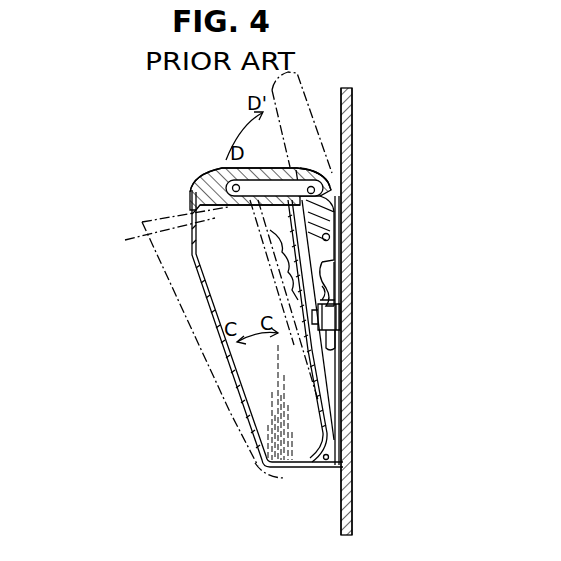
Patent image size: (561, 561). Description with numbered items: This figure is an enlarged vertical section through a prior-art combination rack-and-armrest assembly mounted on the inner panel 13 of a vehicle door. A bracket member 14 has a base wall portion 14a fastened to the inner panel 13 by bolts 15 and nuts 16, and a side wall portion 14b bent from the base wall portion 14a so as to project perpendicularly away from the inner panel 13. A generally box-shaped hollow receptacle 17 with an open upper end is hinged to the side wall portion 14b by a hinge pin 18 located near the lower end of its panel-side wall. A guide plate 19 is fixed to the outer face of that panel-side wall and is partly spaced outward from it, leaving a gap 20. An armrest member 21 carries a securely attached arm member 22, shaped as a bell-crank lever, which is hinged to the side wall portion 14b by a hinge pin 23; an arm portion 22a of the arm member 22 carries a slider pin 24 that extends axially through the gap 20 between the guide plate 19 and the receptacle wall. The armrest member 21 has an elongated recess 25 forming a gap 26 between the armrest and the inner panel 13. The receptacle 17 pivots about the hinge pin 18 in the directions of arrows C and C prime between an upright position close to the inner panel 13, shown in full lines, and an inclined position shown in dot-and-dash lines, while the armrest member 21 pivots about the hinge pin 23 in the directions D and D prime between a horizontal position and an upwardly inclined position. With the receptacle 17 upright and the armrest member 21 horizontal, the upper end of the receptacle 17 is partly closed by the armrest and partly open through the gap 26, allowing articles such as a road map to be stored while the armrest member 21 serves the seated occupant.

The inner panel 13 is at (352, 118).
The bracket member 14 is at (332, 480).
The base wall portion 14a is at (352, 428).
The side wall portion 14b is at (336, 388).
The bolt 15 is at (345, 324).
The nut 16 is at (340, 352).
The receptacle 17 is at (238, 412).
The hinge pin 18 is at (324, 464).
The guide plate 19 is at (336, 266).
The gap 20 is at (336, 292).
The armrest member 21 is at (214, 172).
The arm member 22 is at (200, 208).
The arm portion 22a is at (332, 224).
The hinge pin 23 is at (316, 192).
The slider pin 24 is at (330, 238).
The elongated recess 25 is at (301, 168).
The gap 26 is at (324, 170).